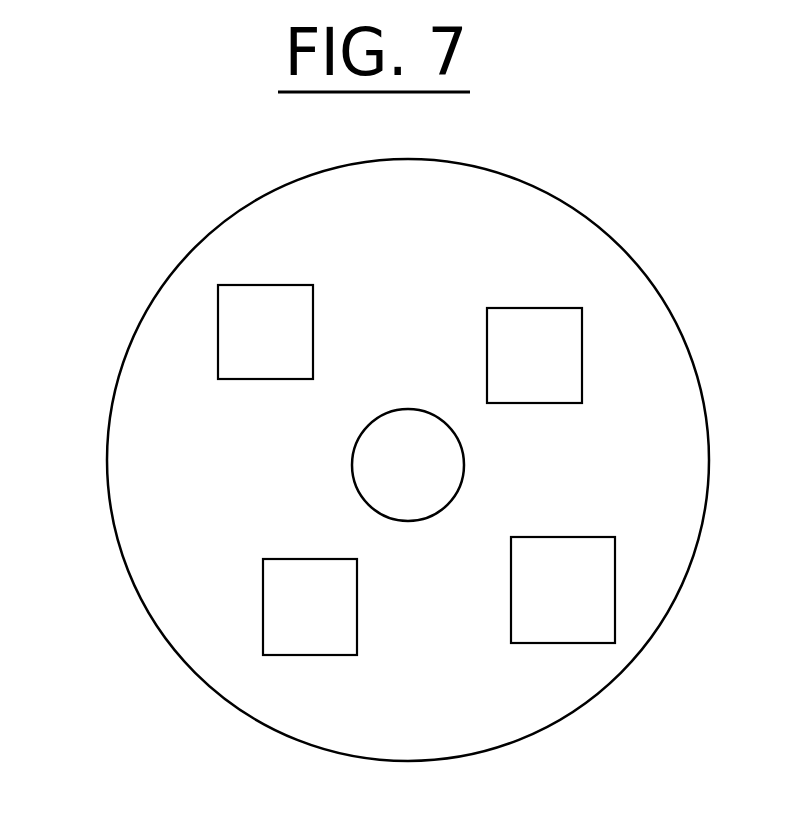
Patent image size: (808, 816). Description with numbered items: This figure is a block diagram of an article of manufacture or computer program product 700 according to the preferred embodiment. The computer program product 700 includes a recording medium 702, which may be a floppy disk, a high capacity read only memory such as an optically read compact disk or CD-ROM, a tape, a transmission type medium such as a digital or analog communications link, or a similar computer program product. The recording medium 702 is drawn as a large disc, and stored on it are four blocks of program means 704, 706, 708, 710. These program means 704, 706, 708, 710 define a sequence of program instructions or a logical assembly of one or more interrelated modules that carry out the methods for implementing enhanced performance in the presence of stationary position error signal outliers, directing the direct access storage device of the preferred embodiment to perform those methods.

The computer program product 700 is at (663, 263).
The recording medium 702 is at (160, 292).
The program means 704 is at (534, 355).
The program means 706 is at (563, 590).
The program means 708 is at (310, 607).
The program means 710 is at (265, 332).